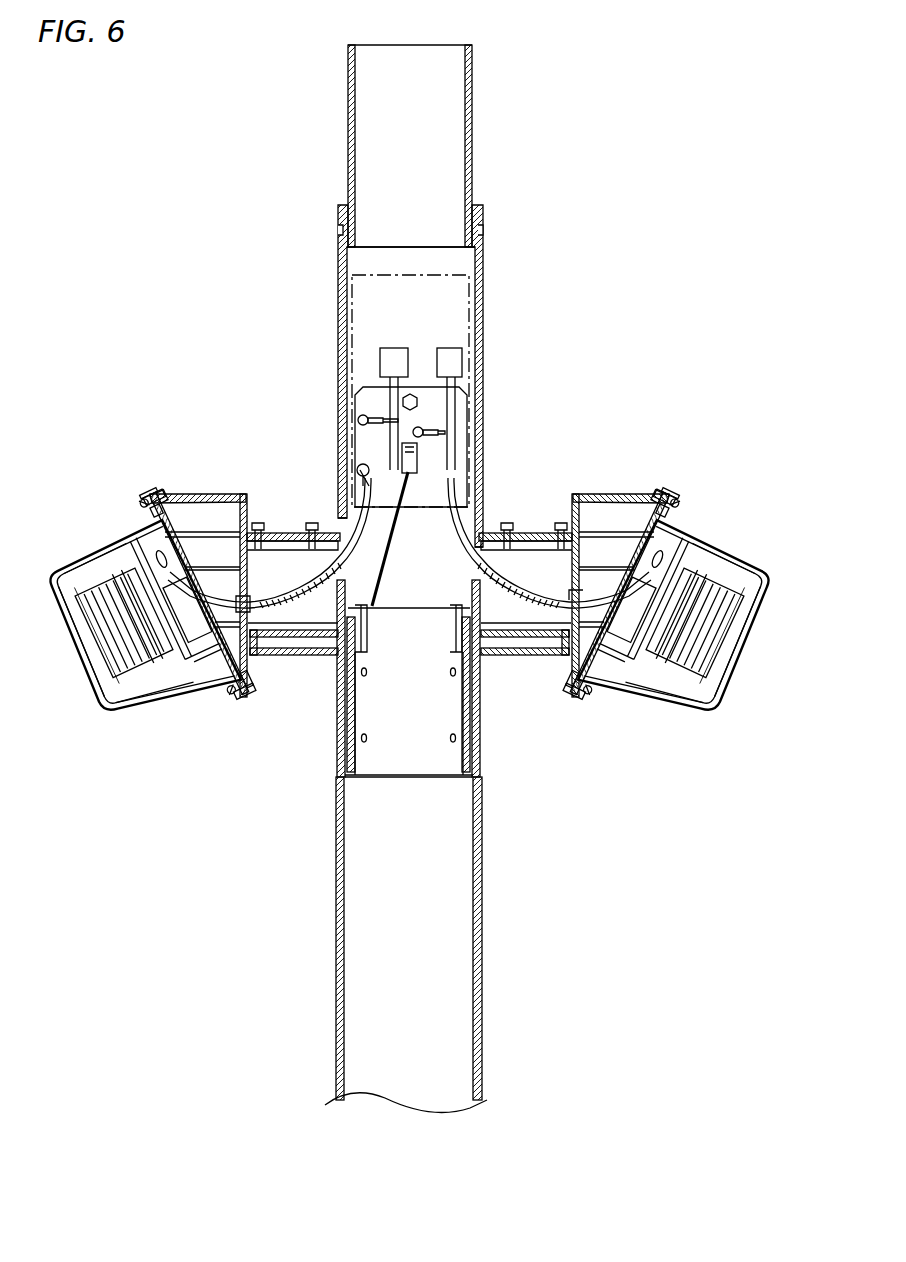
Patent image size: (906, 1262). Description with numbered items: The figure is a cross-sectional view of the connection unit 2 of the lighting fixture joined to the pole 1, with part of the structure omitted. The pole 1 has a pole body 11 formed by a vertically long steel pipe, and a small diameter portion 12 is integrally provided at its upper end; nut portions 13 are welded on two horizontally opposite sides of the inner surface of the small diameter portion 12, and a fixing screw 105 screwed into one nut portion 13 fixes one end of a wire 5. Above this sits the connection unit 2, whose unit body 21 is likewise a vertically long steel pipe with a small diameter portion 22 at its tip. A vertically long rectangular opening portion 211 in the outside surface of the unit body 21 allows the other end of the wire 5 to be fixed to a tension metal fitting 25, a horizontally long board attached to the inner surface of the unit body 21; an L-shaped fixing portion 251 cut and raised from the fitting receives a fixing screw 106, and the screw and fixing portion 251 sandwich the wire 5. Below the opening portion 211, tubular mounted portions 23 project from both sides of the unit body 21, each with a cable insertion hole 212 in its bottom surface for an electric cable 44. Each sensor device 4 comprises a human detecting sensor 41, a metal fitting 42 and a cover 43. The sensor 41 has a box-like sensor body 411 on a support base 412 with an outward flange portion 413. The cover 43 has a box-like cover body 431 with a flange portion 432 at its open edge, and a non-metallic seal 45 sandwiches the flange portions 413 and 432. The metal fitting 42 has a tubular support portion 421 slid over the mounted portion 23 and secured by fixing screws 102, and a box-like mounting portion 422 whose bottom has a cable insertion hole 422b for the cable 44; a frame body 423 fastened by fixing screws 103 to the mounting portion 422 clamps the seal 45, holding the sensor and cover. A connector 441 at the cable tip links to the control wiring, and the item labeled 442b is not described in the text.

The pole 1 is at (409, 579).
The pole body 11 is at (336, 943).
The small diameter portion 12 is at (345, 738).
The nut portion 13 is at (478, 690).
The connection unit 2 is at (415, 391).
The unit body 21 is at (484, 262).
The opening portion 211 is at (476, 324).
The cable insertion hole 212 is at (334, 556).
The small diameter portion 22 is at (471, 114).
The mounted portion 23 is at (308, 660).
The tension metal fitting 25 is at (366, 394).
The fixing portion 251 is at (410, 475).
The sensor device 4 is at (409, 607).
The human detecting sensor 41 is at (108, 658).
The sensor body 411 is at (93, 626).
The support base 412 is at (112, 549).
The flange portion 413 is at (156, 500).
The metal fitting 42 is at (408, 568).
The support portion 421 is at (282, 531).
The mounting portion 422 is at (190, 493).
The cable insertion hole 422b is at (566, 592).
The frame body 423 is at (231, 692).
The cover 43 is at (63, 593).
The cover body 431 is at (73, 650).
The flange portion 432 is at (157, 512).
The electric cable 44 is at (134, 665).
The cable hole 442b is at (263, 628).
The non-metallic seal 45 is at (234, 684).
The connector 441 is at (389, 363).
The wire 5 is at (380, 585).
The fixing screw 102 is at (258, 522).
The fixing screw 103 is at (142, 500).
The fixing screw 105 is at (366, 478).
The fixing screw 106 is at (422, 430).